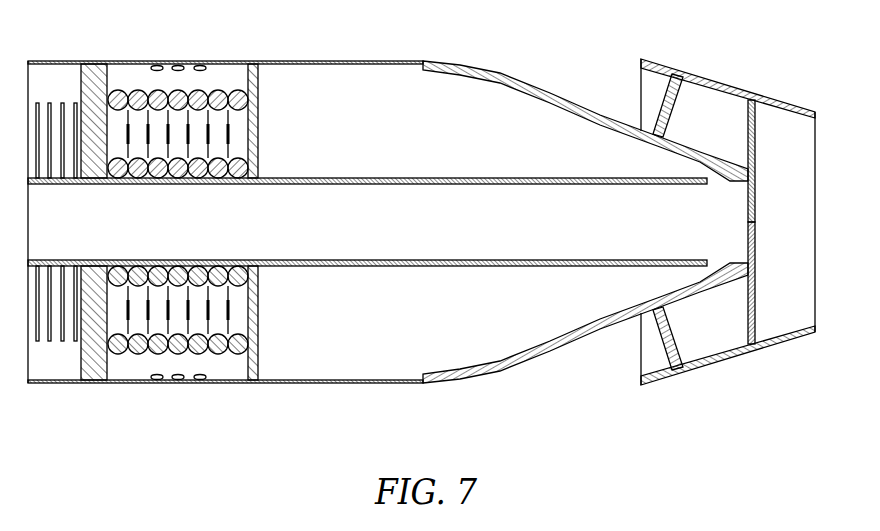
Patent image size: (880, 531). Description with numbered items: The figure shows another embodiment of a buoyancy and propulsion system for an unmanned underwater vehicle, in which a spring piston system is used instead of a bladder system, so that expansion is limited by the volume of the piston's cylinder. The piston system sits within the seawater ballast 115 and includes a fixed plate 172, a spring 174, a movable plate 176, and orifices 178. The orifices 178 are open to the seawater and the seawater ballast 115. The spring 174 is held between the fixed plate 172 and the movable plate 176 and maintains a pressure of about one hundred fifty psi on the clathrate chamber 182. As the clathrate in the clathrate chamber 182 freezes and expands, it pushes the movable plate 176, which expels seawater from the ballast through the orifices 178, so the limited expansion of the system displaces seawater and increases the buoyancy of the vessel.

The seawater ballast 115 is at (140, 77).
The fixed plate 172 is at (81, 365).
The spring 174 is at (244, 320).
The movable plate 176 is at (258, 119).
The orifices 178 is at (203, 74).
The clathrate chamber 182 is at (540, 335).